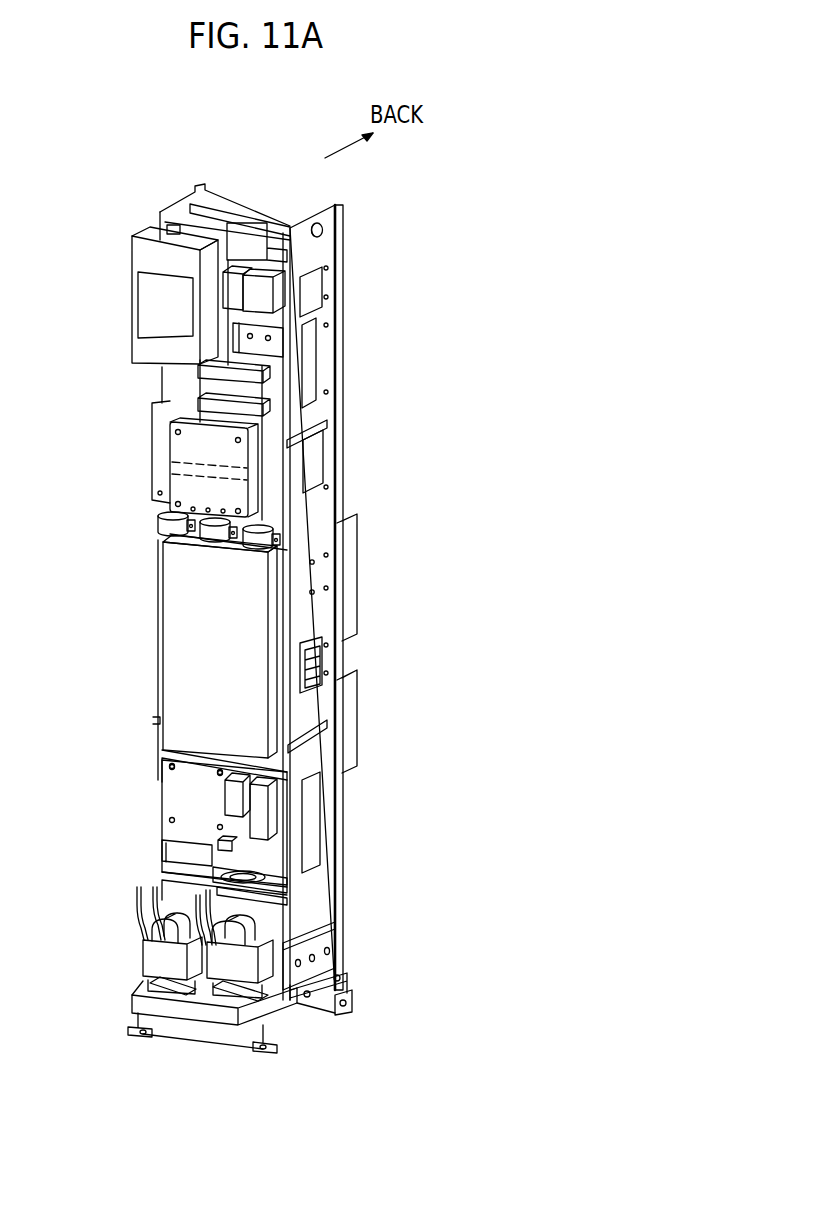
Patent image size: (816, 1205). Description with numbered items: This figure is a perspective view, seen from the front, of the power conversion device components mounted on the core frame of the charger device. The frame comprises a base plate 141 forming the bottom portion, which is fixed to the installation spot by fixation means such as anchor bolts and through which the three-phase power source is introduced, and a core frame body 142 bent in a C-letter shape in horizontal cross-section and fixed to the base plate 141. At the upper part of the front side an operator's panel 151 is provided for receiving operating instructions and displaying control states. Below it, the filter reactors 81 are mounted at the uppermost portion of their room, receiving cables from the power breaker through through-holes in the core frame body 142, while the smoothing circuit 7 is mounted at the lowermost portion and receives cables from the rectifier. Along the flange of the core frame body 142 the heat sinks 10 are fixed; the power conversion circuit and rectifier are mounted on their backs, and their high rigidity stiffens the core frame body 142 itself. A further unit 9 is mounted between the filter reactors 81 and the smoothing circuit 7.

The core frame body 142 is at (353, 227).
The operator's panel 151 is at (130, 301).
The filter reactors 81 is at (183, 449).
The power unit box 9 is at (178, 641).
The heat sinks 10 is at (348, 581).
The smoothing circuit 7 is at (218, 963).
The base plate 141 is at (332, 990).